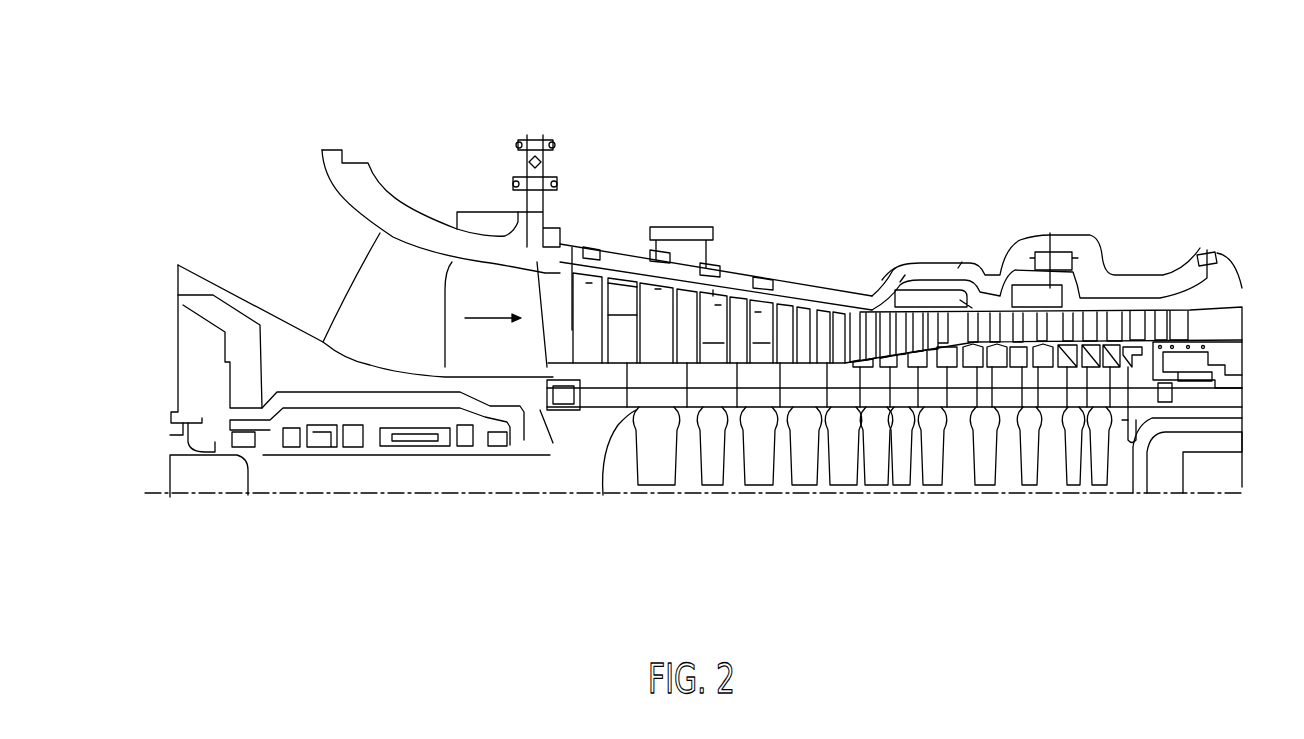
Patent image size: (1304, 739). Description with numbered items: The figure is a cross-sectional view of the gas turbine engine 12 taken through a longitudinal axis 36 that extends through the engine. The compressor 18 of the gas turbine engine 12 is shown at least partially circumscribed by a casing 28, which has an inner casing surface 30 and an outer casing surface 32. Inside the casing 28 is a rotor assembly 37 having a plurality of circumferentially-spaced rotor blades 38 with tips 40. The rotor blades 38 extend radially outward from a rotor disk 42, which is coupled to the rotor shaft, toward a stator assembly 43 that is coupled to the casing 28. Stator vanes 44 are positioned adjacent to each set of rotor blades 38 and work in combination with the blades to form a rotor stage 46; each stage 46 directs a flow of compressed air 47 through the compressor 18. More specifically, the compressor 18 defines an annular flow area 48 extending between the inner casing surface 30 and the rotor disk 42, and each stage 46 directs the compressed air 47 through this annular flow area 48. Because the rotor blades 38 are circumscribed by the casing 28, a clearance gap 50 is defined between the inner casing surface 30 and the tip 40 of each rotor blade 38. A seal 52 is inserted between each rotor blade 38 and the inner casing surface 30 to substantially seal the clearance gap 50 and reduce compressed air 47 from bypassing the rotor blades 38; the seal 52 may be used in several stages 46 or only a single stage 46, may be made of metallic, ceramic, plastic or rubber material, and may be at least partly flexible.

The gas turbine engine 12 is at (318, 115).
The compressor 18 is at (953, 596).
The casing 28 is at (885, 280).
The inner casing surface 30 is at (902, 275).
The outer casing surface 32 is at (960, 265).
The longitudinal axis 36 is at (1210, 492).
The rotor assembly 37 is at (1170, 395).
The rotor blades 38 is at (600, 330).
The tips 40 is at (588, 268).
The rotor disk 42 is at (656, 485).
The stator assembly 43 is at (1203, 254).
The stator vanes 44 is at (634, 311).
The rotor stage 46 is at (678, 570).
The compressed air 47 is at (313, 255).
The annular flow area 48 is at (502, 349).
The clearance gap 50 is at (713, 295).
The seal 52 is at (589, 285).